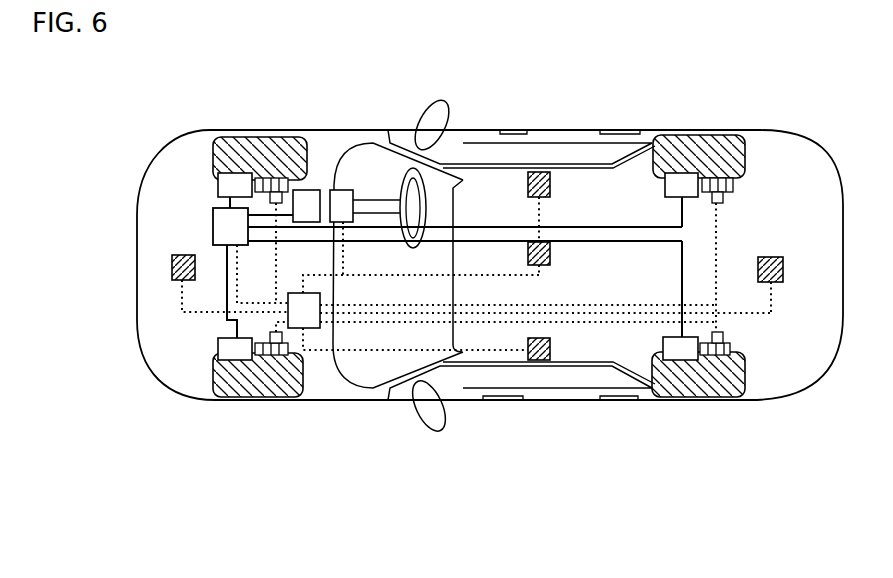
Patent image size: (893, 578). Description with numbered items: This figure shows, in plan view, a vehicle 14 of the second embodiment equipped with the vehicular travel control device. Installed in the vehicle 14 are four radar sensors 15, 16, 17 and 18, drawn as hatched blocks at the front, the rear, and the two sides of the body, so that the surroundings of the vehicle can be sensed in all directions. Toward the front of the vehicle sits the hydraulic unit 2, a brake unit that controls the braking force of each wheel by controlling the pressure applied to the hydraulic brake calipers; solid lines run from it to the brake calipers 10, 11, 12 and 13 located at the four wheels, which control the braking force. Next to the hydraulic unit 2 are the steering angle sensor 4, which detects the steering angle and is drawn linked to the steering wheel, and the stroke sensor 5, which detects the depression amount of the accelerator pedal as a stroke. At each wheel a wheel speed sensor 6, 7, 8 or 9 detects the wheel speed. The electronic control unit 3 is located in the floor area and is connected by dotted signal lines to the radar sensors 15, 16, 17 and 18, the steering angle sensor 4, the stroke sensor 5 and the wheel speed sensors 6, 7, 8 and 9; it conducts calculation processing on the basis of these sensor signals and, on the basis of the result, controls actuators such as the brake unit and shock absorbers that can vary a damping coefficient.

The brake unit 2 is at (213, 218).
The electronic control unit 3 is at (310, 328).
The steering angle sensor 4 is at (340, 190).
The stroke sensor 5 is at (306, 190).
The wheel speed sensor 6 is at (272, 186).
The wheel speed sensor 7 is at (272, 352).
The wheel speed sensor 8 is at (723, 337).
The wheel speed sensor 9 is at (727, 188).
The brake caliper 10 is at (235, 358).
The brake caliper 11 is at (237, 180).
The brake caliper 12 is at (680, 183).
The brake caliper 13 is at (682, 360).
The vehicle 14 is at (778, 156).
The radar sensor 15 is at (172, 264).
The radar sensor 16 is at (775, 257).
The radar sensor 17 is at (540, 172).
The radar sensor 18 is at (540, 361).